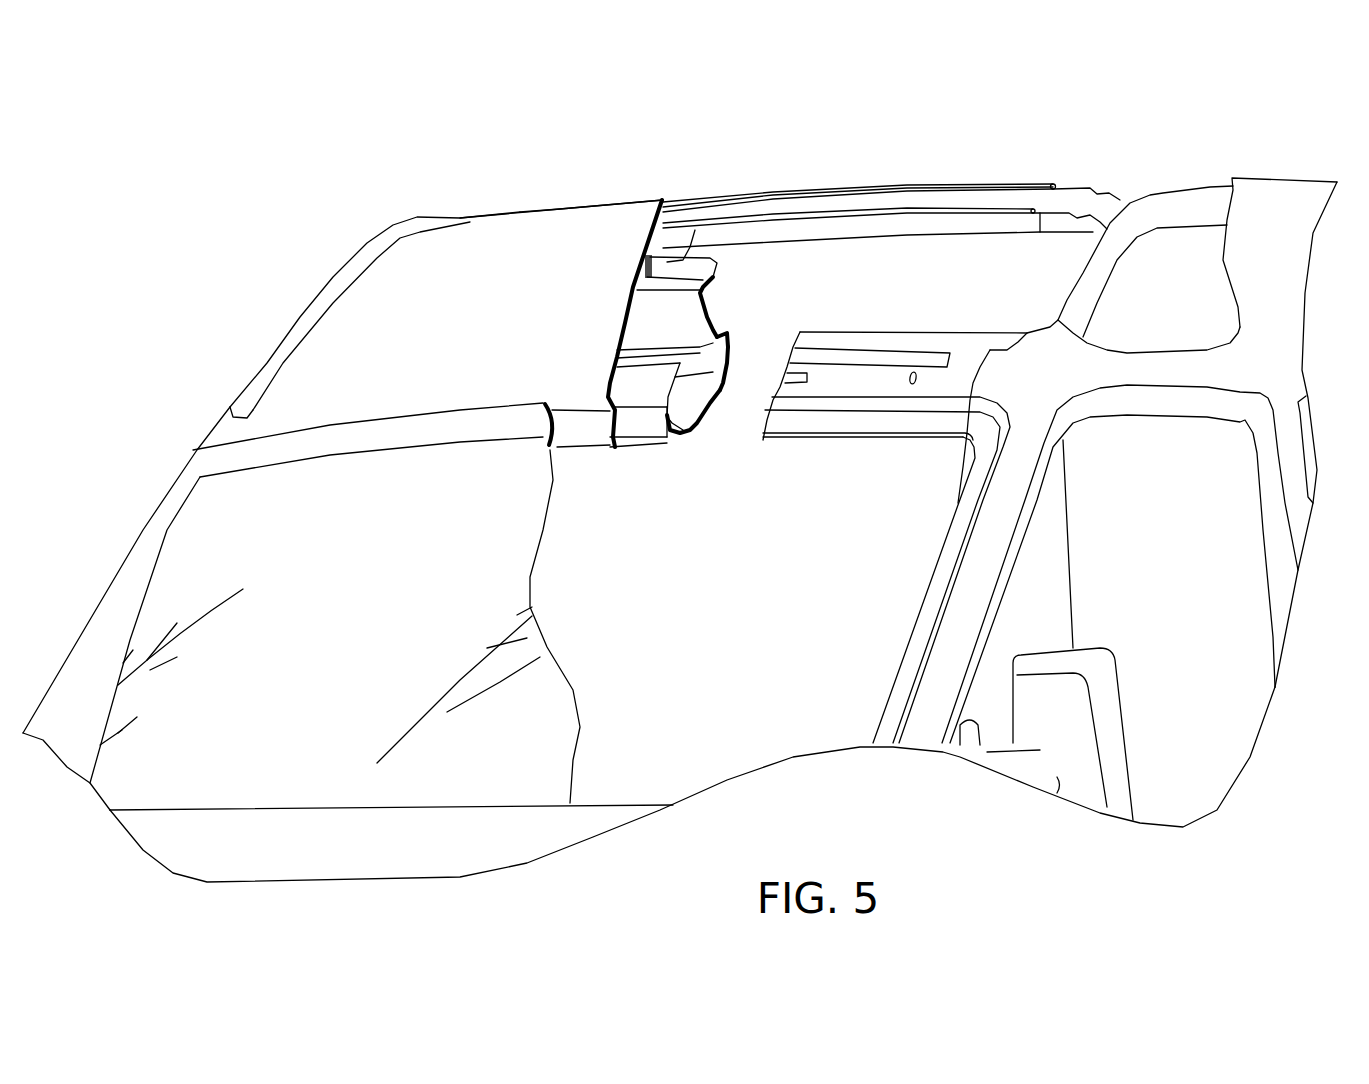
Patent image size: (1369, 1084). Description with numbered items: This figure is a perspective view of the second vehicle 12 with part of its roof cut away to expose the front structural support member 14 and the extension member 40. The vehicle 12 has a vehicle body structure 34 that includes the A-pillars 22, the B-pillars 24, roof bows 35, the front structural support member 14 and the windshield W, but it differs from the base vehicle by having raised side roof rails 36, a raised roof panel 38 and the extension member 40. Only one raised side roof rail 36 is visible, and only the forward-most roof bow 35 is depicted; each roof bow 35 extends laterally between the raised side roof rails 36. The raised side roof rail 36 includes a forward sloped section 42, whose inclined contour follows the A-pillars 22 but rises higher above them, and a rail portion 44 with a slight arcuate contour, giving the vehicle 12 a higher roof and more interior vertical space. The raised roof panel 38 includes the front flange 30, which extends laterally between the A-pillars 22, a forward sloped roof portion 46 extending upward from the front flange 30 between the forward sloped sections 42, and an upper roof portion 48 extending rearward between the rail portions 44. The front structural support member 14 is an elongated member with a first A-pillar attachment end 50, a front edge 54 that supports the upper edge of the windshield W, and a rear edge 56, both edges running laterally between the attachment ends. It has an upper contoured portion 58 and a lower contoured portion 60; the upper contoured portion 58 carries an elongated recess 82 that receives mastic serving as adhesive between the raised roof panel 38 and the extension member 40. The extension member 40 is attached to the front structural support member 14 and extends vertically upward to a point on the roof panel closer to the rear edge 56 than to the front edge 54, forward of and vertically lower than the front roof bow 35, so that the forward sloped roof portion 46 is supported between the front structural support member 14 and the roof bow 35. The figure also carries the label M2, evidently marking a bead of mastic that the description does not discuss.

The vehicle 12 is at (470, 183).
The front structural support member 14 is at (698, 463).
The A-pillars 22 is at (138, 553).
The B-pillars 24 is at (1297, 467).
The front flange 30 is at (588, 430).
The vehicle body structure 34 is at (963, 135).
The roof bows 35 is at (866, 207).
The raised side roof rails 36 is at (1158, 183).
The raised roof panel 38 is at (598, 237).
The extension member 40 is at (732, 290).
The forward sloped section 42 is at (1097, 287).
The rail portion 44 is at (1197, 213).
The forward sloped roof portion 46 is at (533, 283).
The upper roof portion 48 is at (1300, 180).
The first A-pillar attachment end 50 is at (975, 367).
The front edge 54 is at (657, 440).
The rear edge 56 is at (730, 338).
The upper contoured portion 58 is at (638, 387).
The lower contoured portion 60 is at (712, 405).
The recess 82 is at (878, 360).
The windshield W is at (332, 505).
The mold line M2 is at (695, 230).